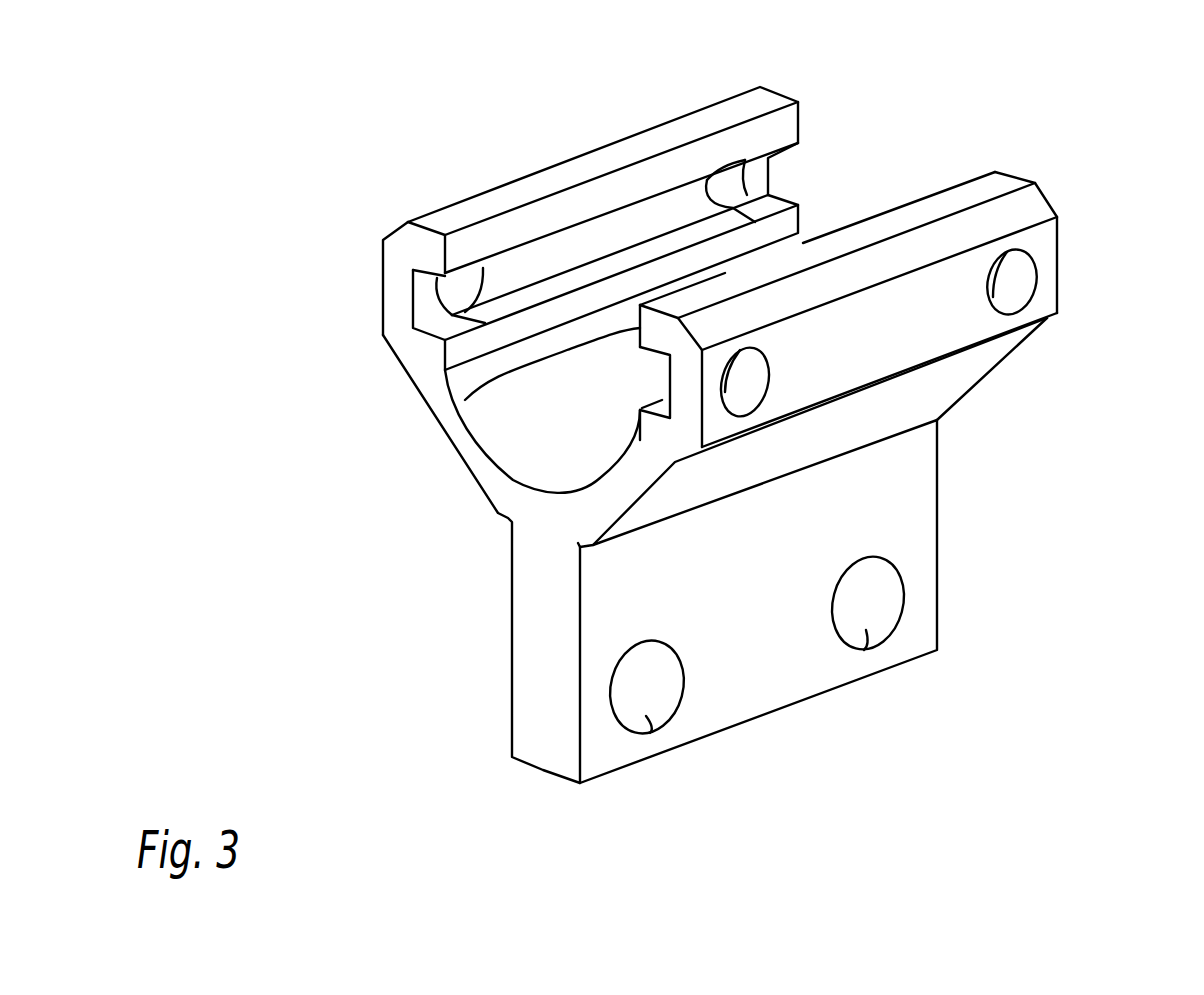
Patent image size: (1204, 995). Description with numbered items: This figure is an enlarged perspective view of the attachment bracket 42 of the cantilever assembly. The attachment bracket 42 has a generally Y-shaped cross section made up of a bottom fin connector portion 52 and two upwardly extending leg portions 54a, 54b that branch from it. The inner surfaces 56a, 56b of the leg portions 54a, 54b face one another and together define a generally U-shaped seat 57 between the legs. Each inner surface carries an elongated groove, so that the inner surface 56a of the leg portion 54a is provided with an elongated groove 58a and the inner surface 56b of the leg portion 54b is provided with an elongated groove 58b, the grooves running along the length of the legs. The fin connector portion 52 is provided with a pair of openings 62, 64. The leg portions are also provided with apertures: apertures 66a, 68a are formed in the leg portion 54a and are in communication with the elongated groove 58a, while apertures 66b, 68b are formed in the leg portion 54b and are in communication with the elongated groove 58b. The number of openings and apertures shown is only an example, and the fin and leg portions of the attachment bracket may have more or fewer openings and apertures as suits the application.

The attachment bracket 42 is at (437, 85).
The fin connector portion 52 is at (540, 660).
The leg portion 54a is at (760, 100).
The leg portion 54b is at (1000, 183).
The inner surface 56a is at (517, 232).
The inner surface 56b is at (465, 405).
The U-shaped seat 57 is at (580, 443).
The elongated groove 58a is at (600, 242).
The elongated groove 58b is at (660, 377).
The opening 62 is at (653, 727).
The opening 64 is at (867, 633).
The aperture 66a is at (438, 288).
The aperture 66b is at (727, 380).
The aperture 68a is at (730, 185).
The aperture 68b is at (1013, 283).